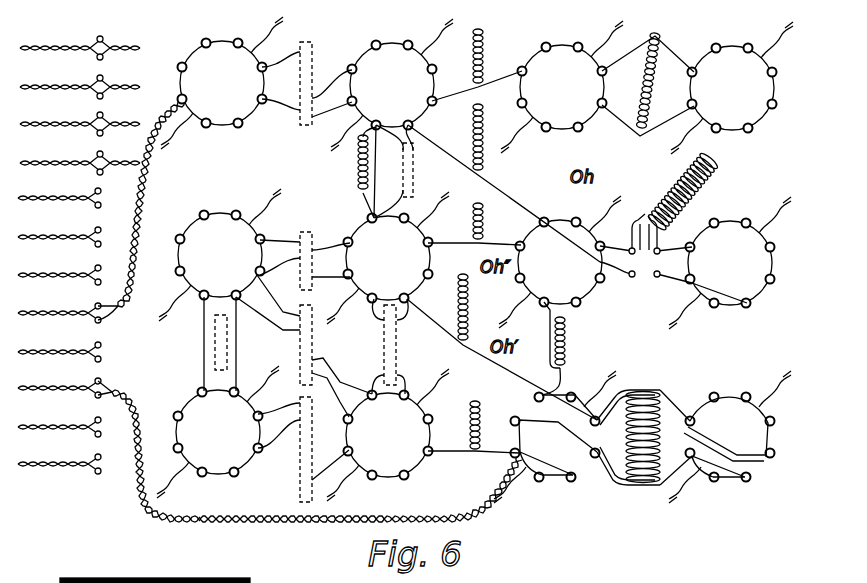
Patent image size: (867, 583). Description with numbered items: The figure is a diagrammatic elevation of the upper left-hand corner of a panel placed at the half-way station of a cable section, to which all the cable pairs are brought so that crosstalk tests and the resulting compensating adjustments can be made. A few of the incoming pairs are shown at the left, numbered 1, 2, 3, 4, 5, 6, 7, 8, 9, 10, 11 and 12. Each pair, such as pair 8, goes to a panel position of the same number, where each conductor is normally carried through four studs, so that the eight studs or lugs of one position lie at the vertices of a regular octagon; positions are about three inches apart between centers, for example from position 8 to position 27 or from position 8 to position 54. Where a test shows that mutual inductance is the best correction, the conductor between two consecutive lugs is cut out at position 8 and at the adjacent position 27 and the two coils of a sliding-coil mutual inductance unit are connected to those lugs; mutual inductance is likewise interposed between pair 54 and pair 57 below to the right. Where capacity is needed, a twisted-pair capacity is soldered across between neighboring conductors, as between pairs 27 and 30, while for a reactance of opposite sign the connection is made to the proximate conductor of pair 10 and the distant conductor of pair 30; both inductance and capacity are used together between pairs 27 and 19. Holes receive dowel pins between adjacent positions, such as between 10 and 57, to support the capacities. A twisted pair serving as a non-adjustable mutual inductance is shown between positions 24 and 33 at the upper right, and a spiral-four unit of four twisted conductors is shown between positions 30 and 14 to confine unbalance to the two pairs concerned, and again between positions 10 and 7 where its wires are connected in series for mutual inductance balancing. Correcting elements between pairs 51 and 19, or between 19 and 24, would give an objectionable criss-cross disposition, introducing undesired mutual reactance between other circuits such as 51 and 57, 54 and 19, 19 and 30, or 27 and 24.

The cable pair 1 is at (80, 51).
The cable pair 2 is at (80, 90).
The cable pair 3 is at (80, 127).
The cable pair 4 is at (80, 166).
The cable pair 5 is at (59, 203).
The cable pair 6 is at (59, 242).
The cable pair position 7 is at (404, 384).
The cable pair position 8 is at (150, 175).
The cable pair 9 is at (59, 357).
The cable pair position 10 is at (317, 446).
The cable pair 11 is at (59, 432).
The cable pair 12 is at (59, 469).
The cable pair position 27 is at (392, 85).
The cable pair position 24 is at (562, 87).
The cable pair position 33 is at (732, 88).
The cable pair position 54 is at (220, 255).
The cable pair position 19 is at (388, 258).
The cable pair position 30 is at (560, 262).
The cable pair position 14 is at (730, 263).
The cable pair position 51 is at (218, 432).
The cable pair position 57 is at (388, 435).